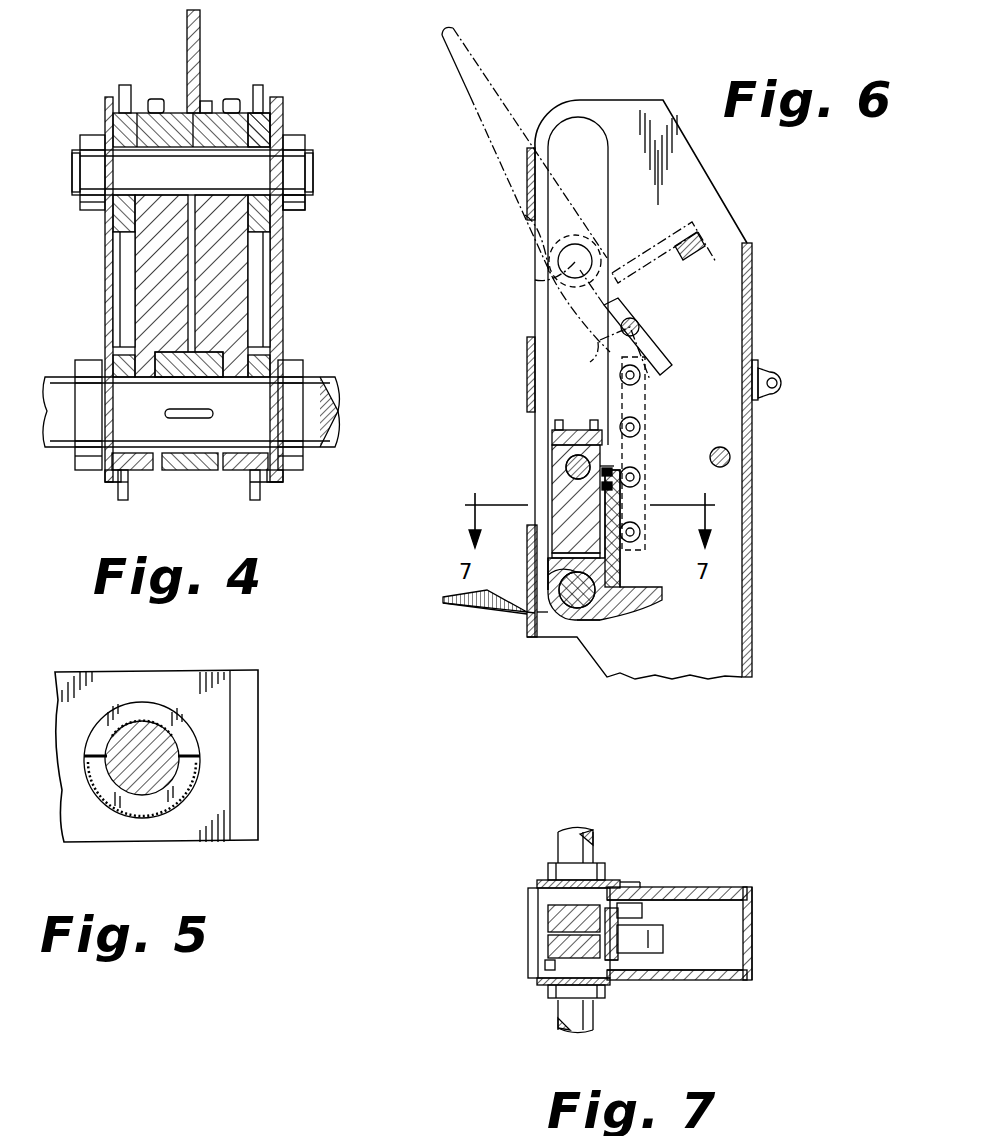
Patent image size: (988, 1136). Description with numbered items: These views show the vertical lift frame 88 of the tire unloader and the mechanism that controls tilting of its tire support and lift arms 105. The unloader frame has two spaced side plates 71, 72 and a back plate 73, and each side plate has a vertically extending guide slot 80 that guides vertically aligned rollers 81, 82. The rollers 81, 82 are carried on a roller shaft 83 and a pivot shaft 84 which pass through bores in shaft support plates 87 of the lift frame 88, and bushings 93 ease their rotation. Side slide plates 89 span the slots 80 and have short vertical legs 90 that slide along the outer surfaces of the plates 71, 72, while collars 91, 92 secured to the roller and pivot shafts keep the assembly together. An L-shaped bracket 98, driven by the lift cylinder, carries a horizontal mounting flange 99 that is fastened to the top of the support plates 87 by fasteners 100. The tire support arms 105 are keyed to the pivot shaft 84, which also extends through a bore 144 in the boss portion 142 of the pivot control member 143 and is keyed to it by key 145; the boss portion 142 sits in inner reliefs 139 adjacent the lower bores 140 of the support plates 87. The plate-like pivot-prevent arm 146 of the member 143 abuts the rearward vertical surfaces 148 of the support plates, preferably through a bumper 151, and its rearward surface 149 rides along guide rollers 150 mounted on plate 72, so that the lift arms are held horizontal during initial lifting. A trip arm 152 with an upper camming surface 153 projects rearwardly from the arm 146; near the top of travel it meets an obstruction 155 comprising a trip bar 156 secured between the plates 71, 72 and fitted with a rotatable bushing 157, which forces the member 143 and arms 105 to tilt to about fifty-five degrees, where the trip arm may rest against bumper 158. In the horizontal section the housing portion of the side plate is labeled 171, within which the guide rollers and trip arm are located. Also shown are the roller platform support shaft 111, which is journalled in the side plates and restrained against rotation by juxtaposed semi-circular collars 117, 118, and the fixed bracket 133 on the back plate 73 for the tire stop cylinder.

In FIG. 4, the side plate 71 is at (124, 85).
In FIG. 5, the side plate 71 is at (173, 685).
In FIG. 4, the side plate 72 is at (258, 85).
In FIG. 6, the side plate 72 is at (712, 176).
In FIG. 7, the side plate 72 is at (700, 887).
In FIG. 5, the back plate 73 is at (245, 722).
In FIG. 6, the back plate 73 is at (752, 560).
In FIG. 7, the back plate 73 is at (751, 915).
In FIG. 4, the guide slot 80 is at (125, 290).
In FIG. 4, the roller 81 is at (263, 118).
In FIG. 4, the roller 82 is at (123, 495).
In FIG. 7, the roller 82 is at (548, 968).
In FIG. 4, the roller shaft 83 is at (294, 212).
In FIG. 6, the roller shaft 83 is at (566, 462).
In FIG. 4, the pivot shaft 84 is at (326, 386).
In FIG. 6, the pivot shaft 84 is at (552, 268).
In FIG. 7, the pivot shaft 84 is at (550, 838).
In FIG. 4, the shaft support plate 87 is at (140, 262).
In FIG. 6, the shaft support plate 87 is at (560, 490).
In FIG. 7, the shaft support plate 87 is at (548, 925).
In FIG. 4, the vertical lift frame 88 is at (236, 66).
In FIG. 4, the side slide plate 89 is at (108, 314).
In FIG. 7, the side slide plate 89 is at (538, 980).
In FIG. 4, the vertical leg 90 is at (117, 488).
In FIG. 7, the vertical leg 90 is at (537, 888).
In FIG. 4, the collar 91 is at (85, 135).
In FIG. 4, the collar 92 is at (75, 465).
In FIG. 7, the collar 92 is at (548, 992).
In FIG. 4, the bushing 93 is at (270, 118).
In FIG. 4, the L-shaped bracket 98 is at (201, 14).
In FIG. 4, the horizontal mounting flange 99 is at (208, 108).
In FIG. 6, the horizontal mounting flange 99 is at (583, 430).
In FIG. 4, the fastener 100 is at (156, 99).
In FIG. 6, the tire support and lift arm 105 is at (461, 78).
In FIG. 5, the roller platform support shaft 111 is at (116, 770).
In FIG. 6, the roller platform support shaft 111 is at (731, 455).
In FIG. 5, the upper collar 117 is at (132, 712).
In FIG. 5, the lower collar 118 is at (105, 790).
In FIG. 6, the fixed bracket 133 is at (780, 378).
In FIG. 4, the inner relief 139 is at (150, 470).
In FIG. 4, the bore 140 is at (150, 453).
In FIG. 4, the boss portion 142 is at (192, 470).
In FIG. 6, the boss portion 142 is at (572, 616).
In FIG. 6, the pivot control member 143 is at (600, 632).
In FIG. 6, the bore 144 is at (545, 585).
In FIG. 6, the key 145 is at (555, 612).
In FIG. 6, the pivot-prevent arm 146 is at (648, 250).
In FIG. 7, the pivot-prevent arm 146 is at (610, 950).
In FIG. 6, the rearward vertical surface 148 is at (640, 455).
In FIG. 6, the rearward surface 149 is at (622, 566).
In FIG. 6, the guide roller 150 is at (640, 380).
In FIG. 7, the guide roller 150 is at (643, 910).
In FIG. 6, the bumper 151 is at (614, 478).
In FIG. 6, the trip arm 152 is at (596, 345).
In FIG. 7, the trip arm 152 is at (664, 940).
In FIG. 6, the camming surface 153 is at (660, 587).
In FIG. 6, the obstruction 155 is at (648, 318).
In FIG. 6, the trip bar 156 is at (640, 368).
In FIG. 6, the bushing 157 is at (622, 322).
In FIG. 6, the bumper 158 is at (700, 255).
In FIG. 7, the channel 171 is at (706, 981).